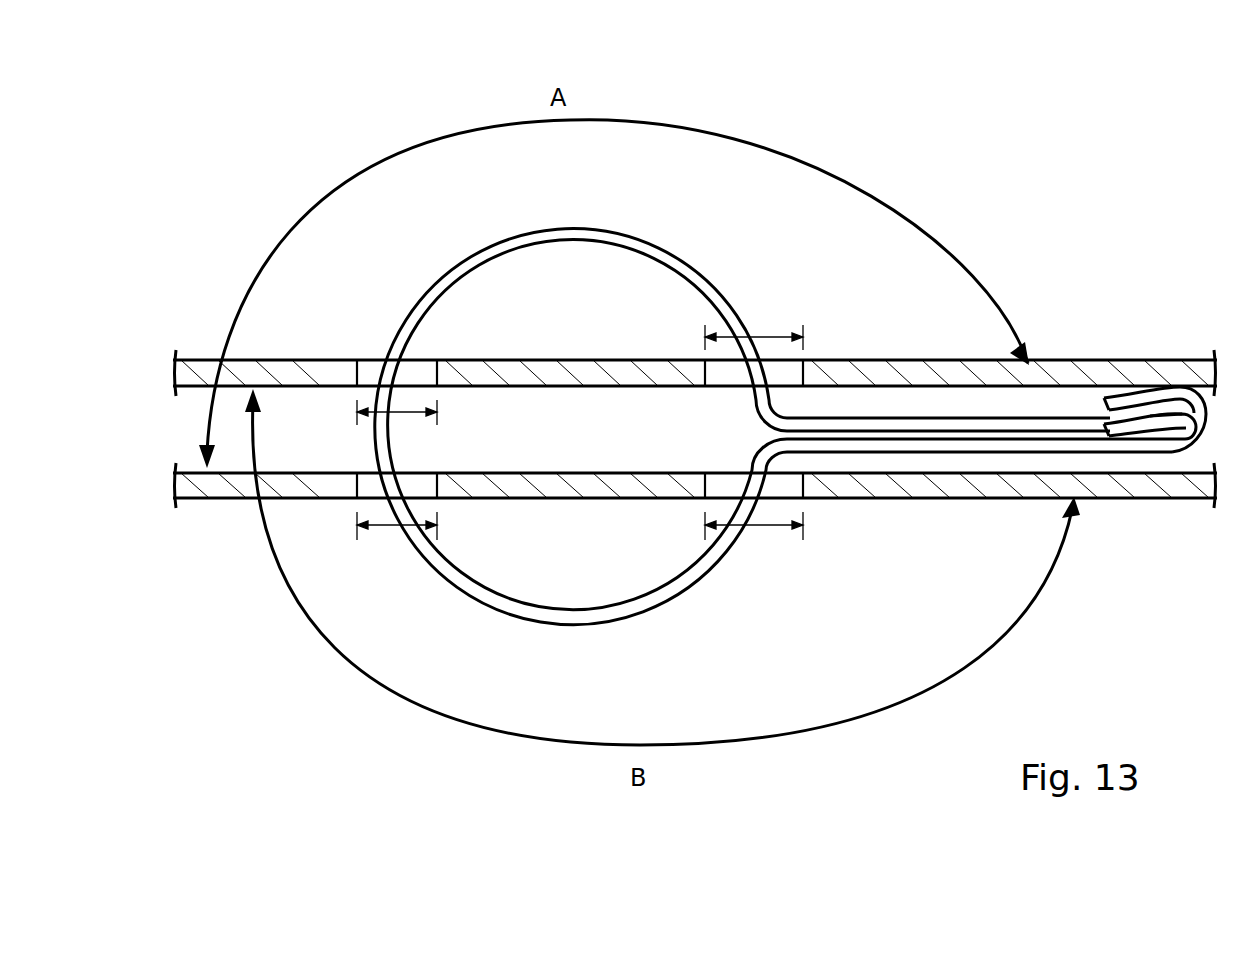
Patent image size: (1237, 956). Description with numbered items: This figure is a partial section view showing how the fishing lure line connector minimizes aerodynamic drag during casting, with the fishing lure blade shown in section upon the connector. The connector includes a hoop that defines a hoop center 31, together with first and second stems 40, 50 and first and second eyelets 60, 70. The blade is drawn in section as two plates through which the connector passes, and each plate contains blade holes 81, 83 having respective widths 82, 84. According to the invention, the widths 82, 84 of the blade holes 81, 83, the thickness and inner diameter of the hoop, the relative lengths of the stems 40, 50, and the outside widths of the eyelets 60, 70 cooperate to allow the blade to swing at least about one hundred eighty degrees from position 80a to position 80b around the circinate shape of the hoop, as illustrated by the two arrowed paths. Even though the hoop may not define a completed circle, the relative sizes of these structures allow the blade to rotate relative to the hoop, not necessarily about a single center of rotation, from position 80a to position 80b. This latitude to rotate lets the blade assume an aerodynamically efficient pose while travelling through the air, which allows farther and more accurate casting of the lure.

The hoop center 31 is at (502, 606).
The first stem 40 is at (893, 453).
The second stem 50 is at (893, 417).
The first eyelet 60 is at (1167, 446).
The second eyelet 70 is at (1128, 400).
The blade position 80a is at (1055, 367).
The blade position 80b is at (1005, 495).
The blade hole 81 is at (728, 378).
The width 82 is at (784, 336).
The blade hole 83 is at (418, 376).
The width 84 is at (412, 414).